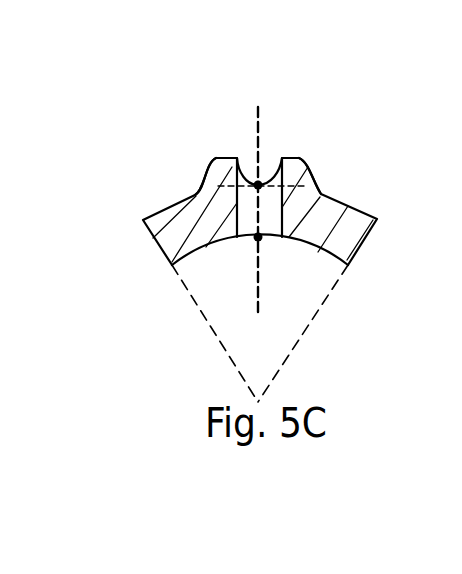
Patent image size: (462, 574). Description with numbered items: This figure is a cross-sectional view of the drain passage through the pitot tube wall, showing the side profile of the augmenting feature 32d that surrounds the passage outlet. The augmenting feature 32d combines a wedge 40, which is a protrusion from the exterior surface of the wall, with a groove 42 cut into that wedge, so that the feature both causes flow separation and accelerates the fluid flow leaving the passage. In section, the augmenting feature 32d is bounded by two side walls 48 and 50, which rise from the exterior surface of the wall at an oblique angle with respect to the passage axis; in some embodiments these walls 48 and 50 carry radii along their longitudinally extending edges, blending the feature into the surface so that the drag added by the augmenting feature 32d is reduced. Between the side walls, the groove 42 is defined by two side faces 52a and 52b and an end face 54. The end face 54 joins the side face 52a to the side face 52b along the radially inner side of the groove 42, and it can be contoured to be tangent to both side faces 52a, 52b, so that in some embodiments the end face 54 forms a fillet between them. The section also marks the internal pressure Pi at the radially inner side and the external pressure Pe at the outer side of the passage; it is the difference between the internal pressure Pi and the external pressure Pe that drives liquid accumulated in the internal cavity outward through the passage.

The augmenting feature 32d is at (202, 132).
The wedge 40 is at (308, 182).
The groove 42 is at (271, 140).
The side wall 48 is at (342, 184).
The side wall 50 is at (184, 183).
The side face 52a is at (247, 170).
The side face 52b is at (283, 157).
The end face 54 is at (241, 230).
The external pressure Pe is at (259, 183).
The internal pressure Pi is at (257, 239).